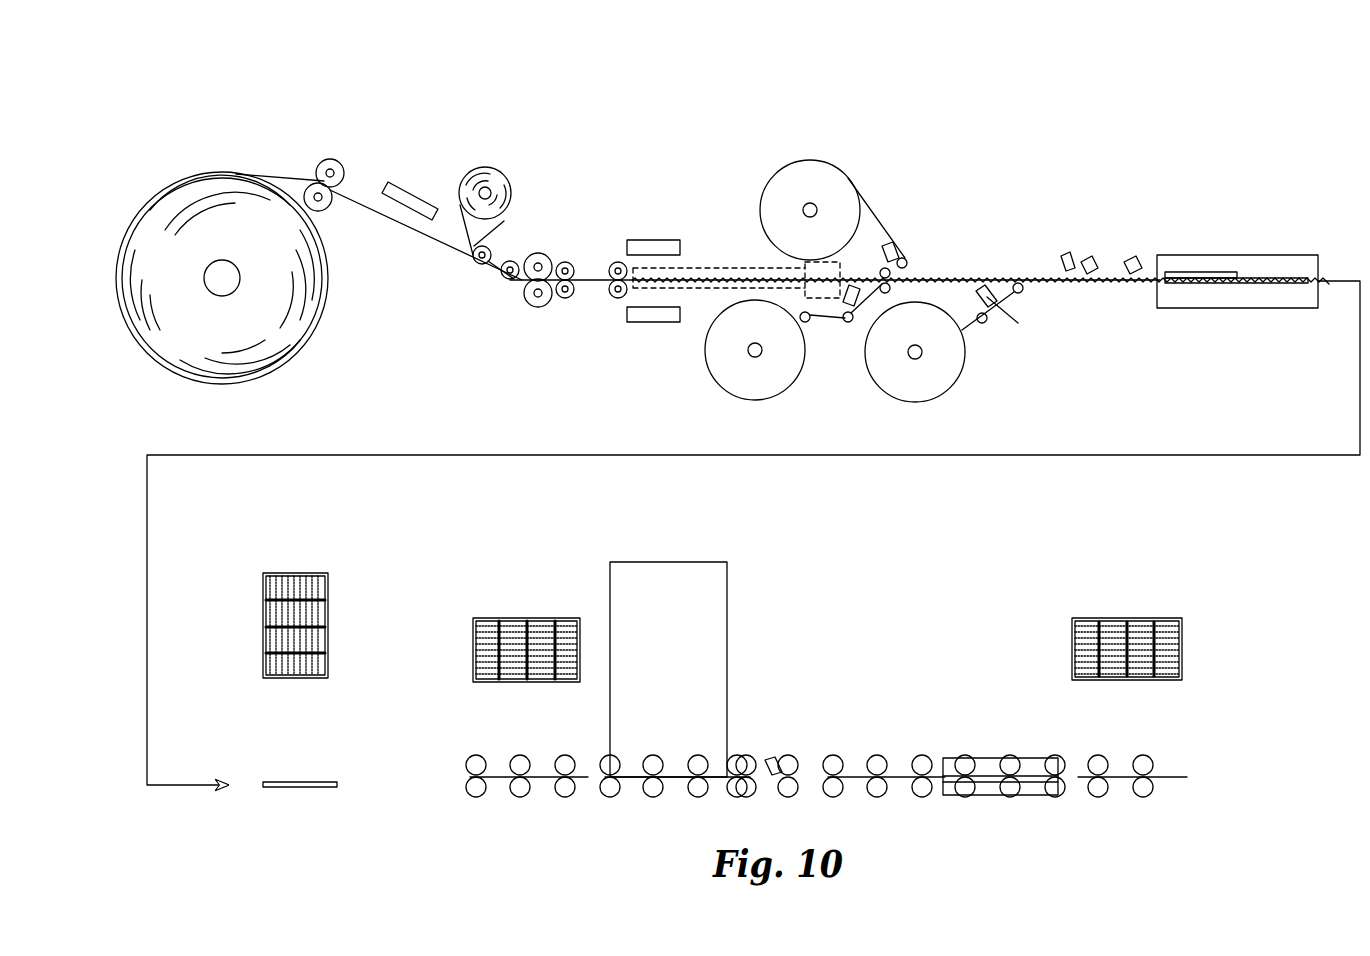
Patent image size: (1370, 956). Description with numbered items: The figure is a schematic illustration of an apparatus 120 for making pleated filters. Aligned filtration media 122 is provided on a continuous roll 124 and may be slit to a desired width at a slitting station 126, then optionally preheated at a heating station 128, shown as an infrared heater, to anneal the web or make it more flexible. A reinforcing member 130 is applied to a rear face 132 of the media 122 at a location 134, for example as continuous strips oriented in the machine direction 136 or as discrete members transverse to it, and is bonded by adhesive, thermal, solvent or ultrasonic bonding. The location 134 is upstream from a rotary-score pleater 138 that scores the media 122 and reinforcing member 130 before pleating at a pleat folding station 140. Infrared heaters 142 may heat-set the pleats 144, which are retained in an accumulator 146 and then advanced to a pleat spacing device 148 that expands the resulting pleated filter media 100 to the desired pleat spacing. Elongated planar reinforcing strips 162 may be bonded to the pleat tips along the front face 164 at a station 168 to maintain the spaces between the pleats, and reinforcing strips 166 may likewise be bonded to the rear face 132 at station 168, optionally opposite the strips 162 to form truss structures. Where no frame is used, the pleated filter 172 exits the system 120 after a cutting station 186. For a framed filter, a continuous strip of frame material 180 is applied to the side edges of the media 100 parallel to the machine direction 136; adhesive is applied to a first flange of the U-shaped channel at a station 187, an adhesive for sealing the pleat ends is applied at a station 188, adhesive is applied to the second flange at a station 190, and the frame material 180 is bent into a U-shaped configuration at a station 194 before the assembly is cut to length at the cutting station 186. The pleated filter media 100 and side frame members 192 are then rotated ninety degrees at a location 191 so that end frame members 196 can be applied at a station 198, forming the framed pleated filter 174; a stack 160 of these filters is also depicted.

The pleated filter media 100 is at (962, 278).
The apparatus 120 is at (1245, 146).
The aligned filtration media 122 is at (274, 173).
The continuous roll 124 is at (165, 354).
The slitting station 126 is at (331, 159).
The heating station 128 is at (387, 193).
The reinforcing member 130 is at (504, 220).
The rear face 132 is at (512, 247).
The location 134 is at (466, 267).
The machine direction 136 is at (1150, 173).
The rotary-score pleater 138 is at (520, 306).
The pleat folding station 140 is at (609, 304).
The infrared heaters 142 is at (645, 240).
The pleats 144 is at (683, 284).
The accumulator 146 is at (738, 263).
The pleat spacing device 148 is at (838, 270).
The stack of articles 160 is at (268, 613).
The reinforcing strips 162 is at (817, 321).
The front face 164 is at (714, 291).
The reinforcing strips 166 is at (867, 200).
The station 168 is at (919, 244).
The pleated filter 172 is at (1275, 288).
The framed pleated filter 174 is at (1175, 782).
The frame material 180 is at (985, 345).
The cutting station 186 is at (1066, 258).
The station 187 is at (1003, 308).
The station 188 is at (1089, 262).
The station 190 is at (1134, 262).
The location 191 is at (434, 672).
The side frame members 192 is at (288, 573).
The station 194 is at (1268, 262).
The end frame members 196 is at (1090, 618).
The station 198 is at (658, 572).